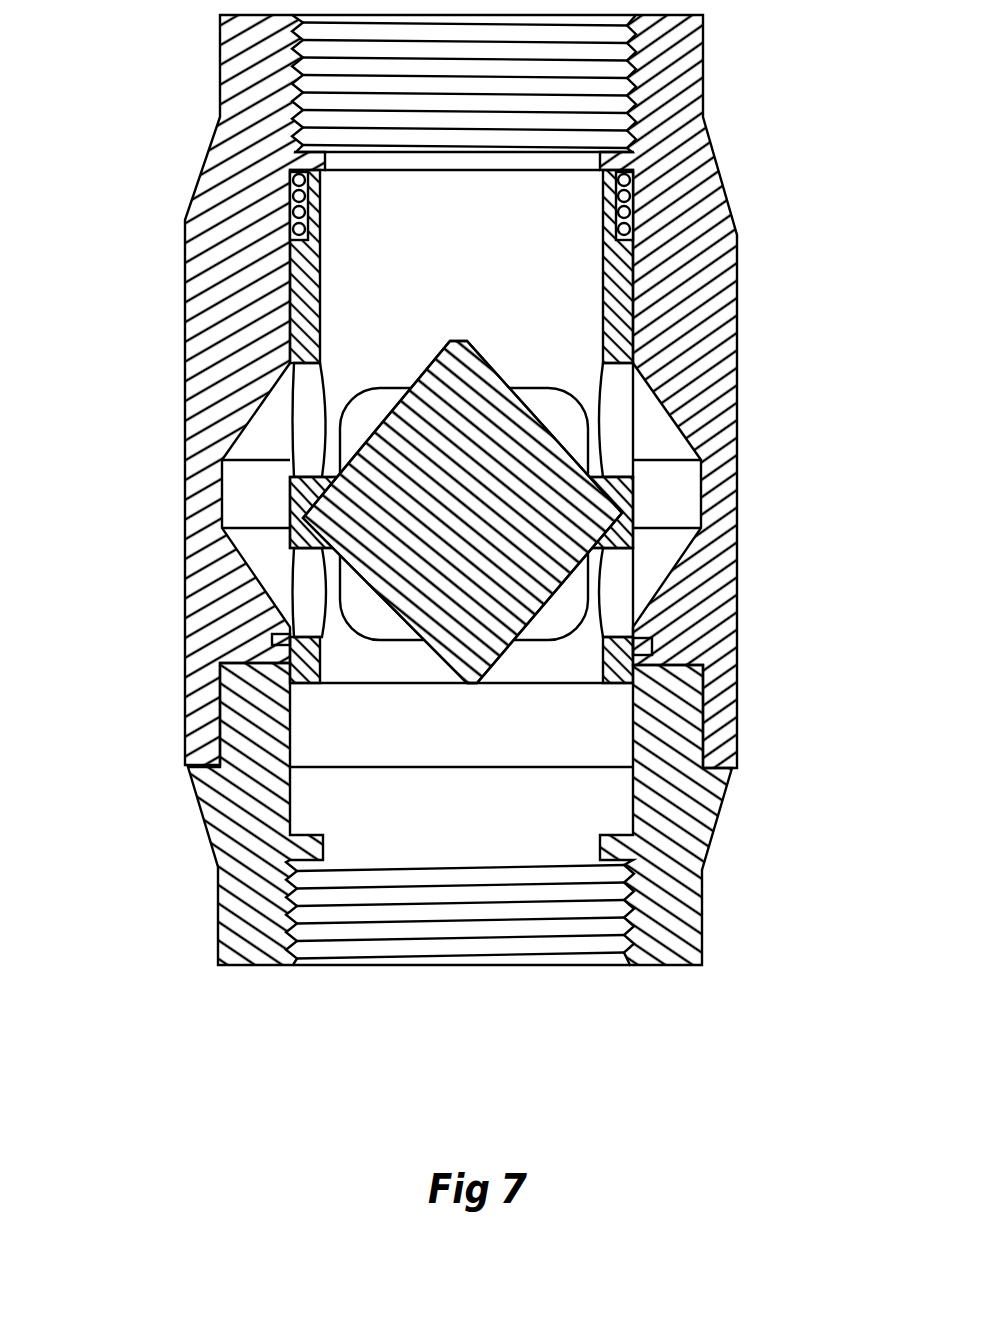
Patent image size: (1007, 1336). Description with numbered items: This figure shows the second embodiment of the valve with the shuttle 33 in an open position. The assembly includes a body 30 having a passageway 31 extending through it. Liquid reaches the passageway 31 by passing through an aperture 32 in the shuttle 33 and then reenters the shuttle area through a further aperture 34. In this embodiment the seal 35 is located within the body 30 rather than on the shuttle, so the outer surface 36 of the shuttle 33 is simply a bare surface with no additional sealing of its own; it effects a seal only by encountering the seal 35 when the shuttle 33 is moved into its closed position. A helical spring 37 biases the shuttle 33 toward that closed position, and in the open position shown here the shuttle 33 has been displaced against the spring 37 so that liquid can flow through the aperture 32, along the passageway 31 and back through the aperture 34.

The body 30 is at (613, 416).
The passageway 31 is at (678, 495).
The aperture 32 is at (613, 592).
The shuttle 33 is at (452, 382).
The aperture 34 is at (737, 310).
The seal 35 is at (272, 641).
The outer surface 36 is at (300, 497).
The helical spring 37 is at (293, 220).